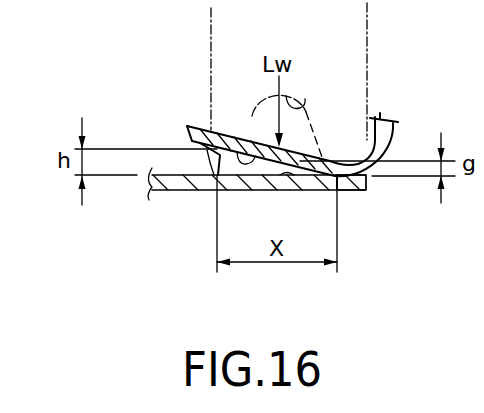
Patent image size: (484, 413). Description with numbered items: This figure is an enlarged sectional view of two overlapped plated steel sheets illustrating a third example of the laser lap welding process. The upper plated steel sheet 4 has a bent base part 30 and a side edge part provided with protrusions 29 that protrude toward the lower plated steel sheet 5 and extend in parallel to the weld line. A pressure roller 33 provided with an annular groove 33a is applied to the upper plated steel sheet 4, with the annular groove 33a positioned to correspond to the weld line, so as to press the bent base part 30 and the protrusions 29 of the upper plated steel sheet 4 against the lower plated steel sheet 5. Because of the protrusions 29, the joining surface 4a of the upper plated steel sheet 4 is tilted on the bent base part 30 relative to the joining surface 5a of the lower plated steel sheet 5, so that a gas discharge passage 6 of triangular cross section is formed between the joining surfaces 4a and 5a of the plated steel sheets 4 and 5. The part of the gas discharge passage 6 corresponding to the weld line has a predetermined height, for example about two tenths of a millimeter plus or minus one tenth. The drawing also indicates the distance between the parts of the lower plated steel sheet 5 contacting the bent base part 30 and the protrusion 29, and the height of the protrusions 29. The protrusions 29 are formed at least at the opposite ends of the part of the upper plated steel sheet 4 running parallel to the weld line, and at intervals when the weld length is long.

The upper plated steel sheet 4 is at (398, 131).
The joining surface of the upper plated steel sheet 4a is at (247, 142).
The lower plated steel sheet 5 is at (167, 192).
The joining surface of the lower plated steel sheet 5a is at (288, 176).
The gas discharge passage 6 is at (228, 150).
The protrusions 29 is at (215, 172).
The bent base part 30 is at (345, 177).
The pressure roller 33 is at (369, 30).
The annular groove 33a is at (307, 110).